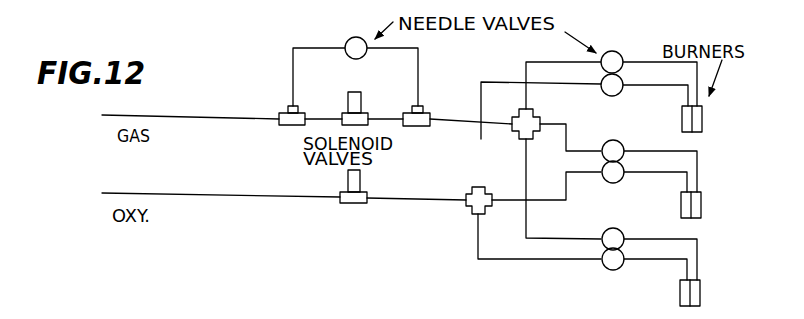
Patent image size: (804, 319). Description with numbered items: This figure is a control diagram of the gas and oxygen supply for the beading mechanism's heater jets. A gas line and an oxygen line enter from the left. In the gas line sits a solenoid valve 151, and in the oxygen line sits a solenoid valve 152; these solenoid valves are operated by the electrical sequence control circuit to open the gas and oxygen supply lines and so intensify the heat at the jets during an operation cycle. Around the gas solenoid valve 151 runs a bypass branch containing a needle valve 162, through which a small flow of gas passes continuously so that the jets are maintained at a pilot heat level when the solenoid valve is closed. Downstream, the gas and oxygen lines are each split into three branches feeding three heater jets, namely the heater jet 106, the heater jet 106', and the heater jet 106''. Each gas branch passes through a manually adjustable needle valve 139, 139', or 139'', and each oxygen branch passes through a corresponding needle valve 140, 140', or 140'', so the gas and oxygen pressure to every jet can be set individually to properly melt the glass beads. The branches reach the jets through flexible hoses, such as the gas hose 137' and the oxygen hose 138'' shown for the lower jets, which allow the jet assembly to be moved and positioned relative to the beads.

The needle valve 162 is at (353, 37).
The solenoid valve 151 is at (351, 92).
The solenoid valve 152 is at (350, 204).
The needle valve 139 is at (628, 47).
The needle valve 140 is at (633, 81).
The needle valve 139' is at (631, 139).
The needle valve 140' is at (634, 168).
The needle valve 139'' is at (621, 228).
The needle valve 140'' is at (604, 277).
The heater jet 106 is at (715, 119).
The heater jet 106' is at (717, 205).
The heater jet 106'' is at (720, 288).
The flexible hose 137' is at (684, 251).
The flexible hose 138'' is at (655, 289).